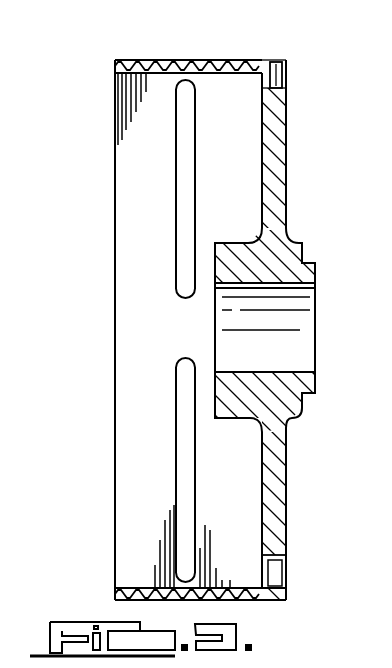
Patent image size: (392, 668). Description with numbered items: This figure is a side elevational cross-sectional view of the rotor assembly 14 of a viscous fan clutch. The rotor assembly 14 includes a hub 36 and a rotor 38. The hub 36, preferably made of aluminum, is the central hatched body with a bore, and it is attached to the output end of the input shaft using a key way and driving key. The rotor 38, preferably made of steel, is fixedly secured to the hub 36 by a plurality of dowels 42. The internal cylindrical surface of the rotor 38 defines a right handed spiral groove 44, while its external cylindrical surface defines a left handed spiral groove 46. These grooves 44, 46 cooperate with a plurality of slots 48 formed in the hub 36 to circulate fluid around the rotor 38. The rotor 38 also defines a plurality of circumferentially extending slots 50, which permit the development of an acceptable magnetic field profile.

The rotor assembly 14 is at (344, 216).
The hub 36 is at (288, 406).
The rotor 38 is at (155, 62).
The dowels 42 is at (286, 82).
The right handed spiral groove 44 is at (138, 597).
The left handed spiral groove 46 is at (139, 594).
The slots 48 is at (278, 563).
The circumferentially extending slots 50 is at (185, 182).